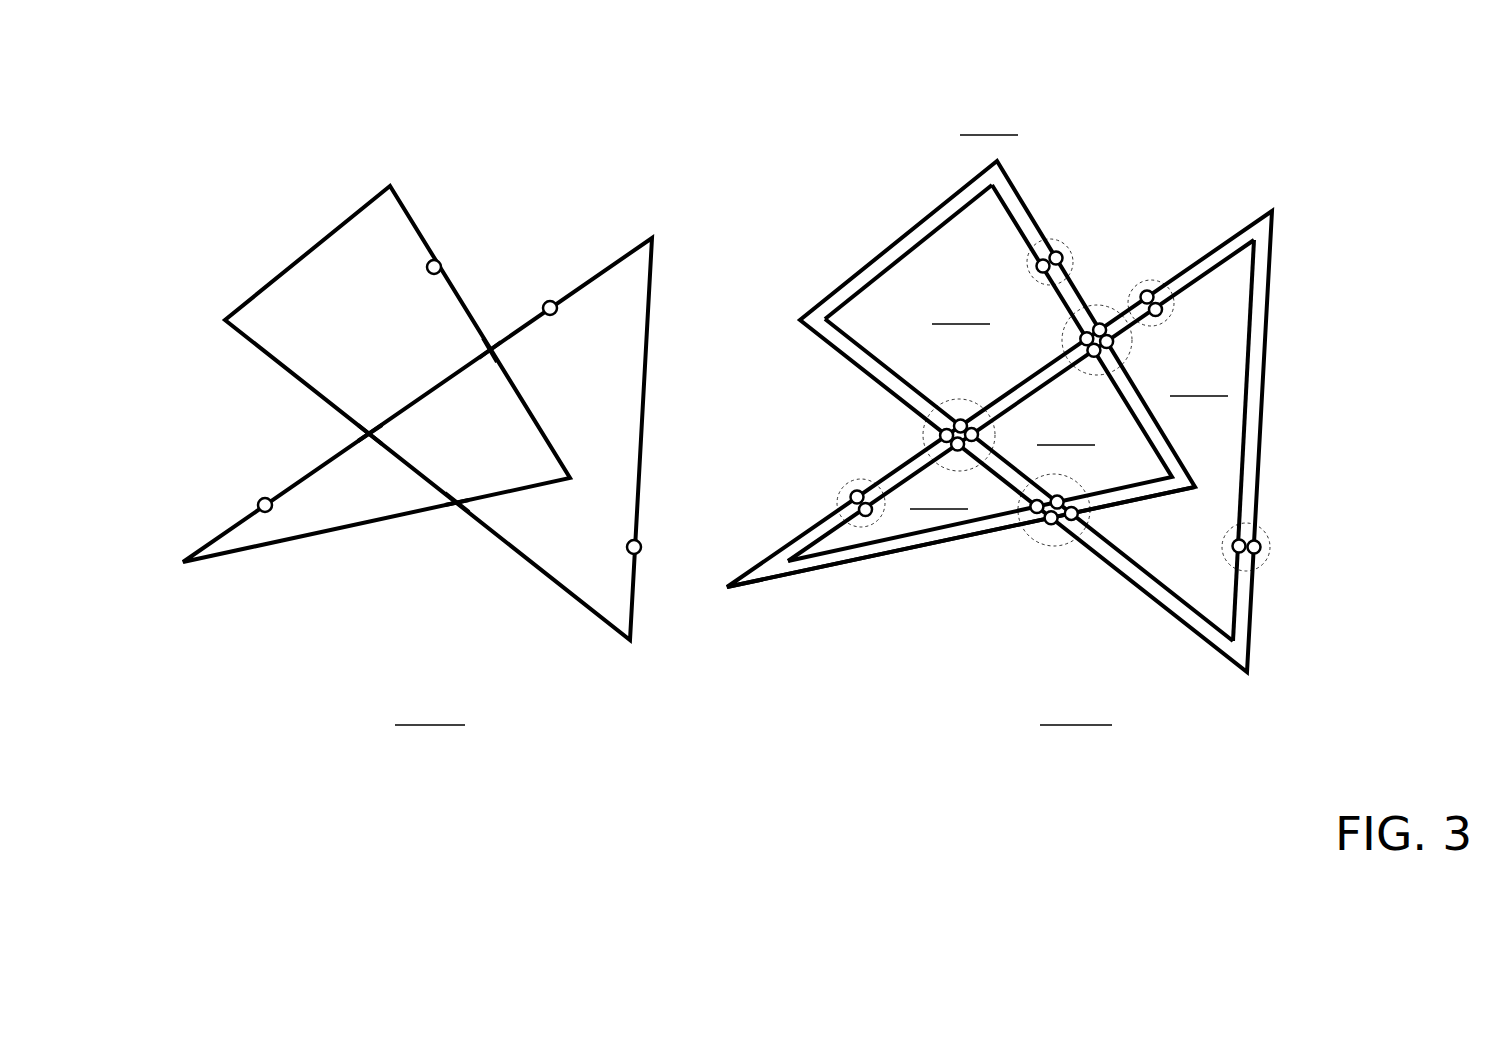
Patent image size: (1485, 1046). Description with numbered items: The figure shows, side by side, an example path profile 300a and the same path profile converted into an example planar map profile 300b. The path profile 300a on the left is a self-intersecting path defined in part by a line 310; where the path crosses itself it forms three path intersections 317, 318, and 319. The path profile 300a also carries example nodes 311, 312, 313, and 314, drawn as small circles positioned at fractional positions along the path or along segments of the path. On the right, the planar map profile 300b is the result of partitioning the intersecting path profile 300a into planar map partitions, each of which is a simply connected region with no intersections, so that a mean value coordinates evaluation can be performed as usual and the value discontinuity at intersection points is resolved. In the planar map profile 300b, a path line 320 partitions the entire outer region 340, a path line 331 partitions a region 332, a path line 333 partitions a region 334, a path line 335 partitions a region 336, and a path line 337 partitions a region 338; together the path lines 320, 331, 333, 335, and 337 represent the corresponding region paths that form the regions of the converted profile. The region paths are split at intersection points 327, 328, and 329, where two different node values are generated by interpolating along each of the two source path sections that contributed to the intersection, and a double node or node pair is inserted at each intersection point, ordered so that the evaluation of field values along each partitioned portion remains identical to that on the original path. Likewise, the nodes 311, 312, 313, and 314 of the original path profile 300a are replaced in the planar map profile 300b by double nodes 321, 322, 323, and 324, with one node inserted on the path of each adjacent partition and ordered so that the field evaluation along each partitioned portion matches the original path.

The path profile 300a is at (430, 711).
The planar map profile 300b is at (1076, 711).
The line 310 is at (322, 240).
The node 311 is at (258, 500).
The node 312 is at (642, 546).
The node 313 is at (553, 300).
The node 314 is at (440, 260).
The path intersection 317 is at (365, 433).
The path intersection 318 is at (455, 506).
The path intersection 319 is at (491, 345).
The path line 320 is at (898, 240).
The double node 321 is at (840, 488).
The double node 322 is at (1266, 533).
The double node 323 is at (1156, 275).
The double node 324 is at (1063, 242).
The intersection point 327 is at (920, 428).
The intersection point 328 is at (1045, 545).
The intersection point 329 is at (1106, 302).
The path line 331 is at (964, 207).
The region 332 is at (961, 310).
The path line 333 is at (1245, 428).
The region 334 is at (1199, 382).
The path line 335 is at (1164, 482).
The region 336 is at (1066, 431).
The path line 337 is at (897, 550).
The region 338 is at (939, 495).
The outer region 340 is at (989, 121).